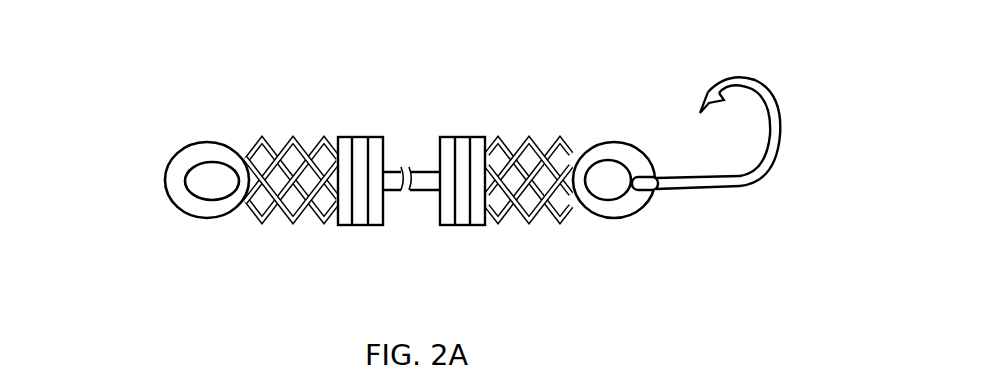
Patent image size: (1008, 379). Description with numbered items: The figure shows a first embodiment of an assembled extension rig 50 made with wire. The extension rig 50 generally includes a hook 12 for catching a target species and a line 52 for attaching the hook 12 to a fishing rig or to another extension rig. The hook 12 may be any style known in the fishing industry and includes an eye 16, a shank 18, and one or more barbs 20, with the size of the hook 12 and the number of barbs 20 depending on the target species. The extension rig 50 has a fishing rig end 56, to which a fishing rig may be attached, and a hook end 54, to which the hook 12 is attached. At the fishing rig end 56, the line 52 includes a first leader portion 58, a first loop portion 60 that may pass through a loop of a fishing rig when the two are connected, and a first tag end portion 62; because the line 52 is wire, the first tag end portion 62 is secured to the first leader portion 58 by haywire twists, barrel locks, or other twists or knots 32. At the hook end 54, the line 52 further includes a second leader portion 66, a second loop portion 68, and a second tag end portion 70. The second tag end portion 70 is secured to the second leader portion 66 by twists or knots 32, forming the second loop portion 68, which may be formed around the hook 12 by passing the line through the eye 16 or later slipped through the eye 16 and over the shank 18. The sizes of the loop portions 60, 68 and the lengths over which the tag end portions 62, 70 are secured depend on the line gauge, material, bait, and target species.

The extension rig 50 is at (216, 52).
The fishing rig end 56 is at (168, 152).
The first loop portion 60 is at (188, 212).
The first tag end portion 62 is at (262, 136).
The first leader portion 58 is at (261, 226).
The twists or knots 32 is at (323, 137).
The line 52 is at (499, 137).
The second tag end portion 70 is at (558, 137).
The second leader portion 66 is at (560, 226).
The hook end 54 is at (612, 143).
The second loop portion 68 is at (609, 218).
The eye 16 is at (652, 202).
The shank 18 is at (703, 192).
The hook 12 is at (776, 95).
The barb 20 is at (699, 98).